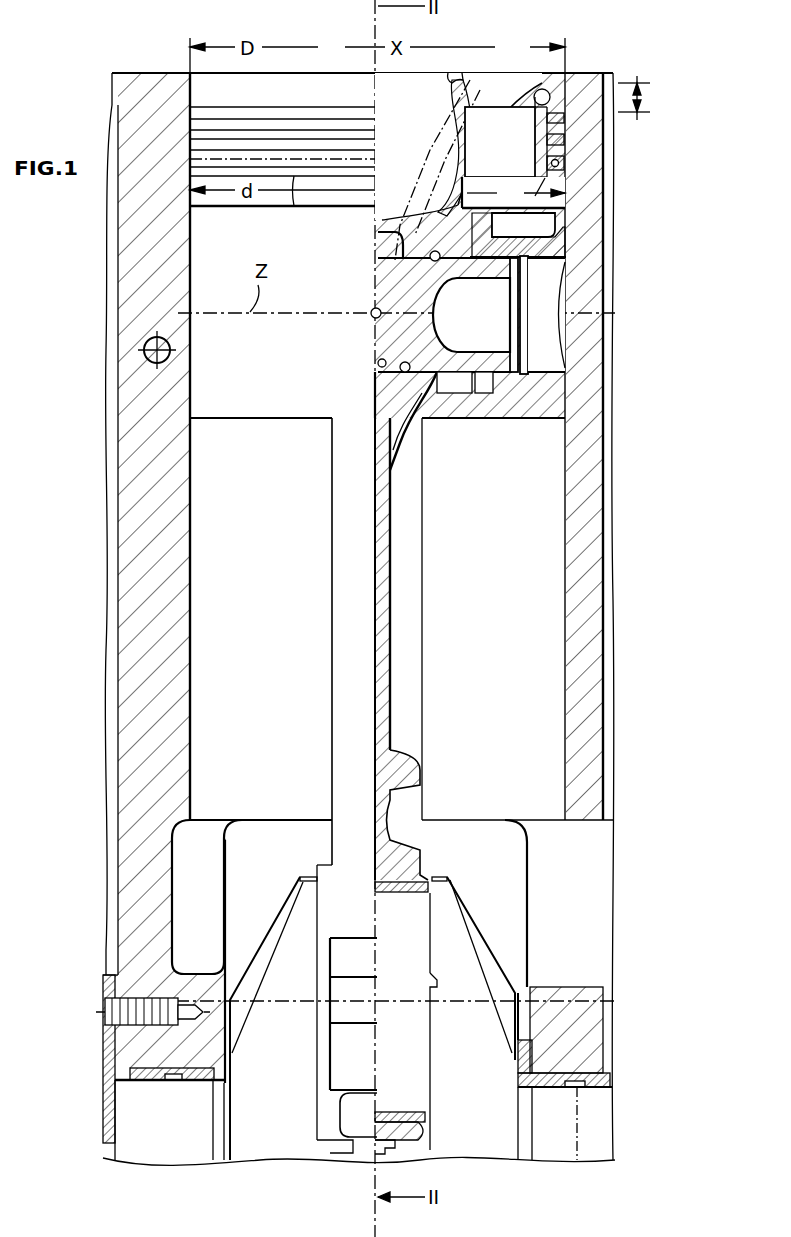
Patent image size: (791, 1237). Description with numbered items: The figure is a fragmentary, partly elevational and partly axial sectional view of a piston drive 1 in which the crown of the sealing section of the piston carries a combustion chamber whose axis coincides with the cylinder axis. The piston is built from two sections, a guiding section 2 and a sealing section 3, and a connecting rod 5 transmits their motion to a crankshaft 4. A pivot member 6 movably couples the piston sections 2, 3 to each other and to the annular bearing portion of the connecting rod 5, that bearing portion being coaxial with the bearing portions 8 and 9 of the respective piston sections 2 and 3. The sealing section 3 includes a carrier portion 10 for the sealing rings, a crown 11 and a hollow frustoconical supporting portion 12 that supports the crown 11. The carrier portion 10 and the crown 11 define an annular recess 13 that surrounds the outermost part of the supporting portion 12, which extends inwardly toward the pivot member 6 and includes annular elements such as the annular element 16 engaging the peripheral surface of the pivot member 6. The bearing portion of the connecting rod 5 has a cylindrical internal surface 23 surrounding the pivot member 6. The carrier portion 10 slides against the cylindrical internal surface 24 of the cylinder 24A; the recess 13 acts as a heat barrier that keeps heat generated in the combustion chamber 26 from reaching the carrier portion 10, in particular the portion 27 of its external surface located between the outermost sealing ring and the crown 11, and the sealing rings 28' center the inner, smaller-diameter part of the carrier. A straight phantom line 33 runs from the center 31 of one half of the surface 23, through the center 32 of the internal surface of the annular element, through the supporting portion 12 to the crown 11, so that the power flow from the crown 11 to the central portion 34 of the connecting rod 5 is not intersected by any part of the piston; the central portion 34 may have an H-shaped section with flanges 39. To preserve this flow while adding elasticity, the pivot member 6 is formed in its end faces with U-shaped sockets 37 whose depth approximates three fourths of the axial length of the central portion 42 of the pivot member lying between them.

The piston drive 1 is at (324, 476).
The guiding section of the piston 2 is at (250, 402).
The sealing section of the piston 3 is at (318, 98).
The crankshaft 4 is at (466, 948).
The connecting rod 5 is at (328, 616).
The pivot member 6 is at (393, 322).
The bearing portion of the guiding piston section 8 is at (494, 395).
The bearing portion of the sealing piston section 9 is at (474, 278).
The carrier portion 10 is at (513, 192).
The crown 11 is at (482, 92).
The supporting portion 12 is at (468, 160).
The annular recess 13 is at (538, 98).
The annular element 16 is at (452, 395).
The cylindrical internal surface of the bearing portion 23 is at (377, 365).
The cylindrical internal surface of the cylinder 24 is at (190, 580).
The cylinder 24A is at (614, 578).
The combustion chamber 26 is at (418, 152).
The portion of the cylindrical external surface 27 is at (644, 98).
The sealing rings 28' is at (605, 141).
The center of the half of the surface 23 31 is at (400, 378).
The center of the surface in the annular element 32 is at (430, 262).
The straight phantom line 33 is at (445, 192).
The central portion of the connecting rod 34 is at (345, 720).
The socket 37 is at (494, 343).
The flange 39 is at (432, 614).
The central portion of the pivot member 42 is at (445, 315).